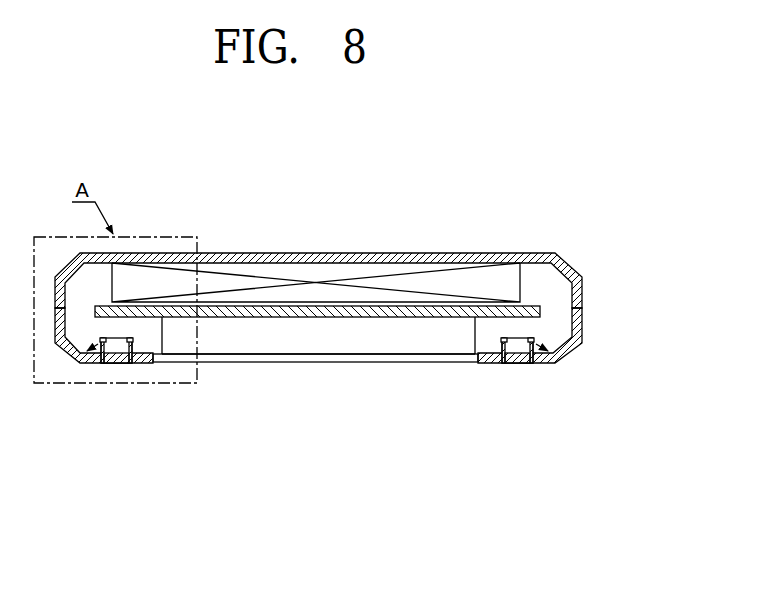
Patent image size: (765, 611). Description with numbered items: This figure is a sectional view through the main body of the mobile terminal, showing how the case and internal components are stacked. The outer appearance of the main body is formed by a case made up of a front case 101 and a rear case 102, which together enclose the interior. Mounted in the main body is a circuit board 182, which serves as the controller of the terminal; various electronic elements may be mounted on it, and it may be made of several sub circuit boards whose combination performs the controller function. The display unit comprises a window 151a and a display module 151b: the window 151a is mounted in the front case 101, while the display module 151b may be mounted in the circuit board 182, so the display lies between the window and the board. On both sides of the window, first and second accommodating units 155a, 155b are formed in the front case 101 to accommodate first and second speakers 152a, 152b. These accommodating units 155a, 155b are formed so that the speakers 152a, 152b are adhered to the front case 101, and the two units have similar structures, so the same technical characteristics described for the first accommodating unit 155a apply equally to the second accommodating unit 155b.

The front case 101 is at (483, 362).
The rear case 102 is at (392, 253).
The window 151a is at (328, 357).
The display module 151b is at (395, 343).
The first speaker 152a is at (125, 350).
The second speaker 152b is at (512, 348).
The first accommodating unit 155a is at (79, 358).
The second accommodating unit 155b is at (558, 362).
The circuit board 182 is at (265, 312).